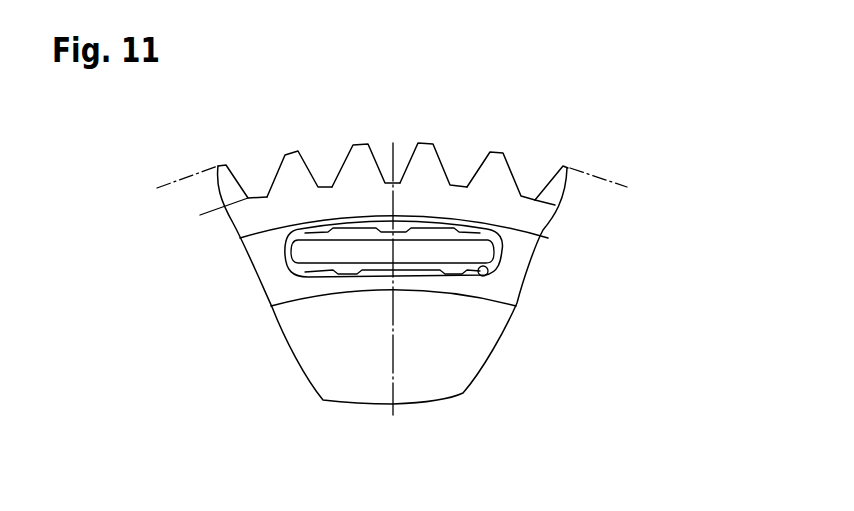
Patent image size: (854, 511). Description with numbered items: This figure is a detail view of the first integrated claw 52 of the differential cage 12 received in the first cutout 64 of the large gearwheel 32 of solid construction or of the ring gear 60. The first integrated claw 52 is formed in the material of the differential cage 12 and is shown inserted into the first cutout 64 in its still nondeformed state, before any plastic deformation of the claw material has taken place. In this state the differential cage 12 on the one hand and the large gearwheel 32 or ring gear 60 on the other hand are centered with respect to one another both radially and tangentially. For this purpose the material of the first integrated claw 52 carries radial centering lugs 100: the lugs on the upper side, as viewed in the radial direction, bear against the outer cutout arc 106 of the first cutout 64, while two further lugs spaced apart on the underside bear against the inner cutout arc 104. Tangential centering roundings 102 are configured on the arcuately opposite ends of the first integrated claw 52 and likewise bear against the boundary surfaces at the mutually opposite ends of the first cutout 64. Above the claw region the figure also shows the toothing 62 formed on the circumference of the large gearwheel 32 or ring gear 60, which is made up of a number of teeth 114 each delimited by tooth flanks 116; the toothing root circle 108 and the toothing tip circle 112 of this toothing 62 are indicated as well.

The differential cage 12 is at (470, 327).
The large gearwheel 32 is at (583, 155).
The first integrated claw 52 is at (438, 177).
The ring gear 60 is at (525, 208).
The toothing 62 is at (507, 140).
The first cutout 64 is at (297, 270).
The radial centering lugs 100 is at (316, 232).
The tangential centering roundings 102 is at (288, 233).
The inner cutout arc 104 is at (483, 296).
The outer cutout arc 106 is at (451, 220).
The toothing root circle 108 is at (592, 218).
The toothing tip circle 112 is at (583, 170).
The teeth 114 is at (368, 144).
The tooth flanks 116 is at (343, 160).